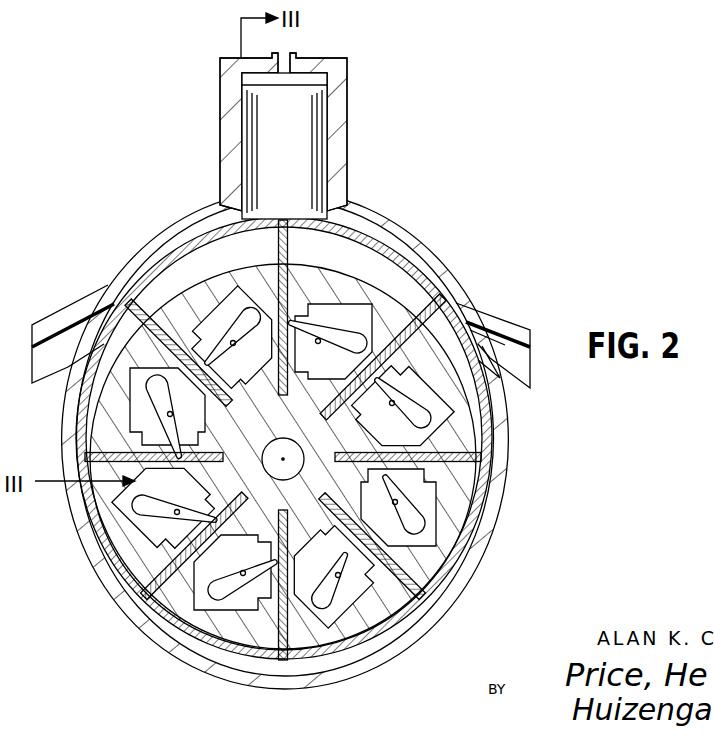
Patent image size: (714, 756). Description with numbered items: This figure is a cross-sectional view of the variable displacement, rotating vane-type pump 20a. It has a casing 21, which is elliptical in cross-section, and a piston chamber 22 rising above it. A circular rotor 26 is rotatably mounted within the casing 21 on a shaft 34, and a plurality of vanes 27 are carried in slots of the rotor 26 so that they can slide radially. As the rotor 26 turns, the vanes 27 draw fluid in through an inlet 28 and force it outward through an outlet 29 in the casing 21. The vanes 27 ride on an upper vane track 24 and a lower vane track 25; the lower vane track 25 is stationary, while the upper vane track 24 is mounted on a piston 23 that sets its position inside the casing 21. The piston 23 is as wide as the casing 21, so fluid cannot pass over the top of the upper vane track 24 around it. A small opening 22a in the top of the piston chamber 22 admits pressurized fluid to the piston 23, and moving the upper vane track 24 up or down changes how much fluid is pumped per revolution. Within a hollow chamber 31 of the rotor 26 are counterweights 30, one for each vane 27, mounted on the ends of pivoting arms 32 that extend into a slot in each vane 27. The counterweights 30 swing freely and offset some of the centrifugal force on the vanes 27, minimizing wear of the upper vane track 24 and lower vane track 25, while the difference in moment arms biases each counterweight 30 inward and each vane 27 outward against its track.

The pump 20a is at (358, 152).
The casing 21 is at (167, 226).
The piston chamber 22 is at (230, 112).
The small opening 22a is at (287, 70).
The piston 23 is at (291, 146).
The upper vane track 24 is at (403, 255).
The lower vane track 25 is at (470, 566).
The rotor 26 is at (427, 347).
The vanes 27 is at (292, 249).
The inlet 28 is at (63, 322).
The outlet 29 is at (529, 338).
The counterweights 30 is at (246, 322).
The hollow chamber 31 is at (238, 295).
The pivoting arms 32 is at (228, 349).
The shaft 34 is at (267, 463).